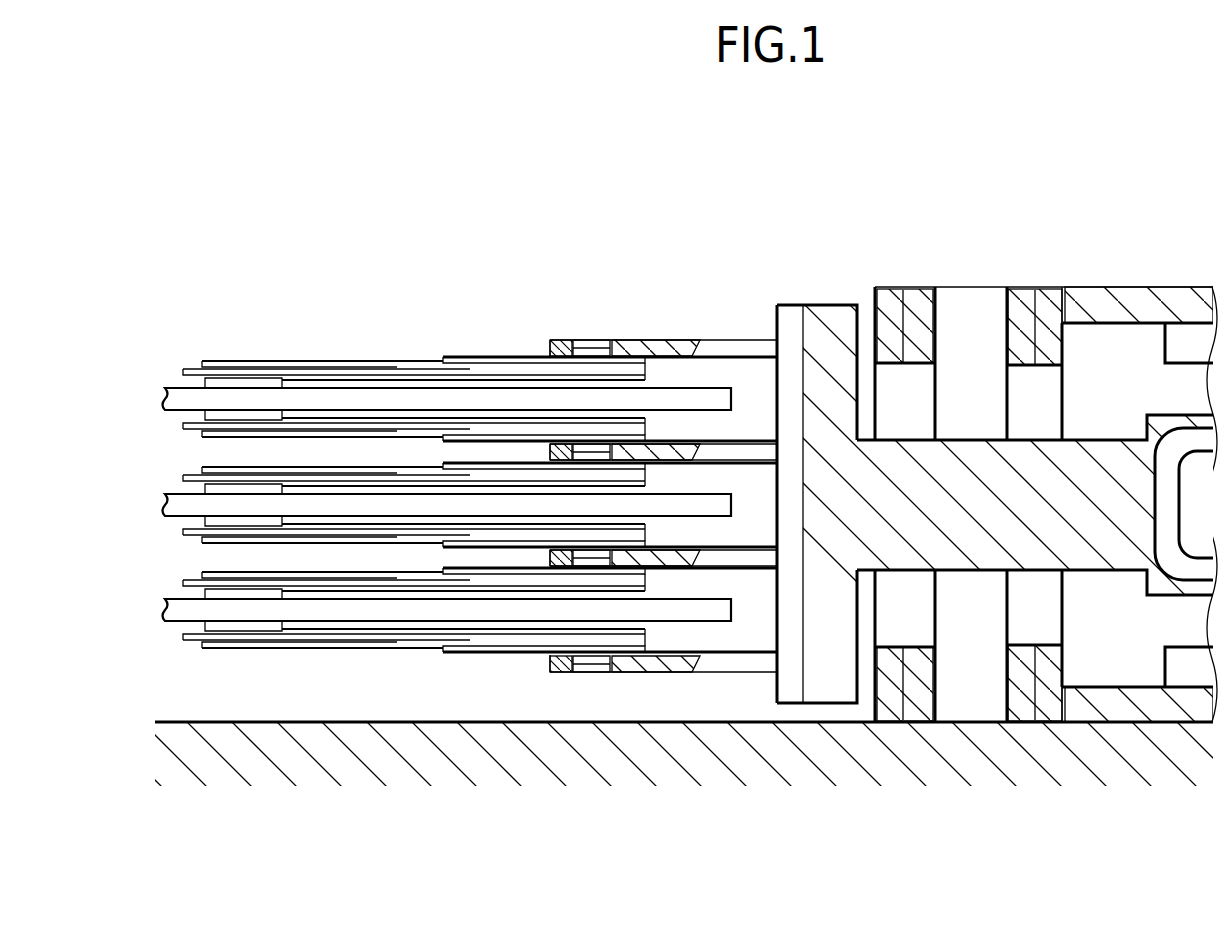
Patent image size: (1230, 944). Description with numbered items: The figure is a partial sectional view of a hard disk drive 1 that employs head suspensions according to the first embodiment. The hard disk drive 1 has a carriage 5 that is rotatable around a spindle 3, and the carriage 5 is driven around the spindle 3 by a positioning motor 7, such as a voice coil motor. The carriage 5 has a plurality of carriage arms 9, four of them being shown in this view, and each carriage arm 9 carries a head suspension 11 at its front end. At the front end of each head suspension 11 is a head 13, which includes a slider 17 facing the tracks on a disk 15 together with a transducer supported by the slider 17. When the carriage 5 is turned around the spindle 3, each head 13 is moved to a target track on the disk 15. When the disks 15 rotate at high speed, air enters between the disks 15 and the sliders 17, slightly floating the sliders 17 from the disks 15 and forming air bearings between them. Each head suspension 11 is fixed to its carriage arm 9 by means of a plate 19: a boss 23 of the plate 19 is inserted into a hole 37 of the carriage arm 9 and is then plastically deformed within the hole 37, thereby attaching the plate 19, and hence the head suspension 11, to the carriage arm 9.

The hard disk drive 1 is at (945, 150).
The spindle 3 is at (965, 300).
The carriage 5 is at (790, 305).
The positioning motor 7 is at (1112, 290).
The carriage arm 9 is at (750, 450).
The head suspension 11 is at (405, 357).
The head 13 is at (178, 426).
The disk 15 is at (688, 400).
The slider 17 is at (256, 383).
The plate 19 is at (511, 356).
The boss 23 is at (572, 340).
The hole 37 is at (602, 338).